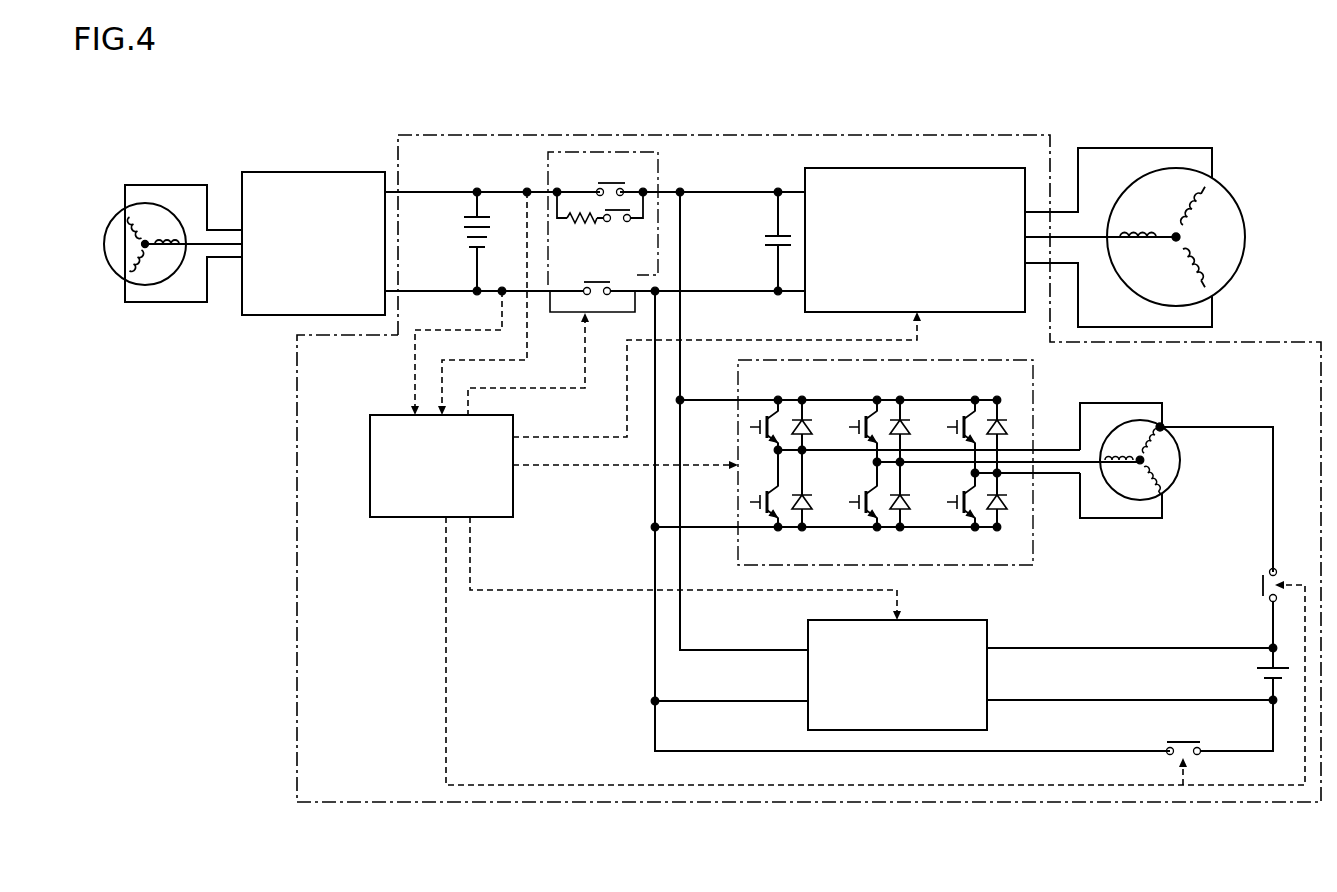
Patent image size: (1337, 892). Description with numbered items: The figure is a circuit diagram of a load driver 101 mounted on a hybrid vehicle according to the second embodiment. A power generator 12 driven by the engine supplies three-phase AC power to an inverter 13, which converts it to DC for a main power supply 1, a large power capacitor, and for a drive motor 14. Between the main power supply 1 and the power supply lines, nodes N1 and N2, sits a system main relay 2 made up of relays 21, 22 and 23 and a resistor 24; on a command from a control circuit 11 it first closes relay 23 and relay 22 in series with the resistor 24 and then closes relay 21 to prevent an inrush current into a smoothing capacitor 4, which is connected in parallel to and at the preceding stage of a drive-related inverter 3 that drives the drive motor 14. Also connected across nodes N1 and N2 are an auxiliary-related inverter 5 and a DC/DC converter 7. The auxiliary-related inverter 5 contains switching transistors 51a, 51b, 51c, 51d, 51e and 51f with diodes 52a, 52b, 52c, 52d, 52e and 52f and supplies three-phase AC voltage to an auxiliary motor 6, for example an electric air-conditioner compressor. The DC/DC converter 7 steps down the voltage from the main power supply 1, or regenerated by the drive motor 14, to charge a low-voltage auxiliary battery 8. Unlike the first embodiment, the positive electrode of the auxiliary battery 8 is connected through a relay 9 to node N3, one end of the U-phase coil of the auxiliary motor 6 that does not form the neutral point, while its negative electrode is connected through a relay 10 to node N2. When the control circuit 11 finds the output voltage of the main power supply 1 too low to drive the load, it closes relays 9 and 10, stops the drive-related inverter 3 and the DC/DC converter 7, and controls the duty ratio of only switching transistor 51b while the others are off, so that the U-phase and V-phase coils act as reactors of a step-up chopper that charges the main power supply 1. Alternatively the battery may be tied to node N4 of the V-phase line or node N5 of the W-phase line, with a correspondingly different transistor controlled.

The main power supply 1 is at (463, 233).
The system main relay 2 is at (603, 251).
The drive-related inverter 3 is at (975, 168).
The capacitor 4 is at (765, 240).
The auxiliary-related inverter 5 is at (897, 462).
The auxiliary motor 6 is at (1182, 462).
The DC/DC converter 7 is at (950, 620).
The auxiliary battery 8 is at (1255, 670).
The relay 9 is at (1258, 588).
The relay 10 is at (1185, 737).
The control circuit 11 is at (370, 467).
The power generator 12 is at (143, 203).
The inverter 13 is at (315, 172).
The drive motor 14 is at (1246, 237).
The relay 21 is at (612, 182).
The relay 22 is at (618, 228).
The relay 23 is at (600, 300).
The resistor 24 is at (583, 228).
The switching transistor 51a is at (757, 512).
The switching transistor 51b is at (855, 512).
The switching transistor 51c is at (953, 512).
The switching transistor 51d is at (755, 418).
The switching transistor 51e is at (853, 418).
The switching transistor 51f is at (950, 418).
The diode 52a is at (806, 512).
The diode 52b is at (905, 512).
The diode 52c is at (1002, 512).
The diode 52d is at (806, 418).
The diode 52e is at (905, 418).
The diode 52f is at (1002, 418).
The load driver 101 is at (297, 397).
The node N1 is at (683, 313).
The node N2 is at (655, 500).
The node N3 is at (1163, 424).
The node N4 is at (1061, 475).
The node N5 is at (1125, 519).